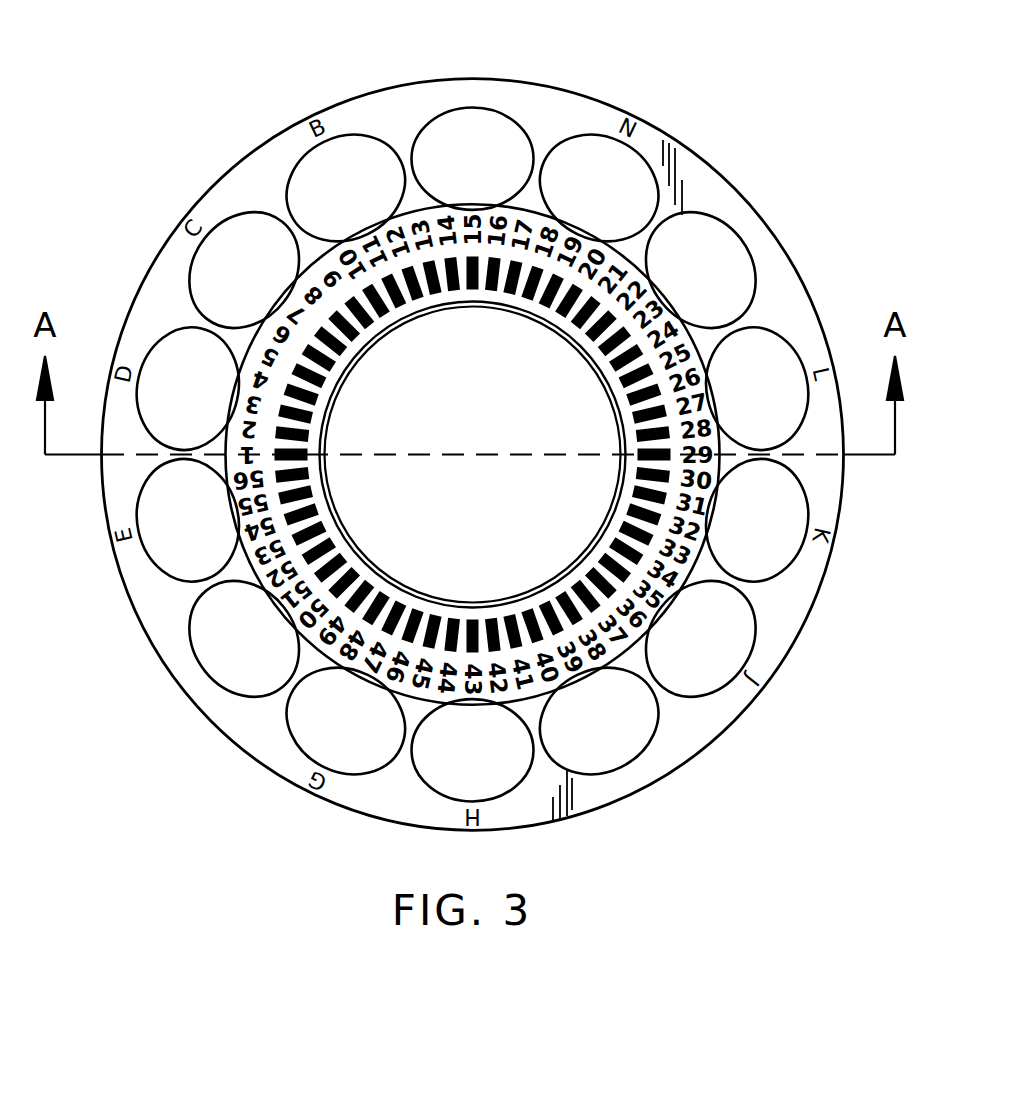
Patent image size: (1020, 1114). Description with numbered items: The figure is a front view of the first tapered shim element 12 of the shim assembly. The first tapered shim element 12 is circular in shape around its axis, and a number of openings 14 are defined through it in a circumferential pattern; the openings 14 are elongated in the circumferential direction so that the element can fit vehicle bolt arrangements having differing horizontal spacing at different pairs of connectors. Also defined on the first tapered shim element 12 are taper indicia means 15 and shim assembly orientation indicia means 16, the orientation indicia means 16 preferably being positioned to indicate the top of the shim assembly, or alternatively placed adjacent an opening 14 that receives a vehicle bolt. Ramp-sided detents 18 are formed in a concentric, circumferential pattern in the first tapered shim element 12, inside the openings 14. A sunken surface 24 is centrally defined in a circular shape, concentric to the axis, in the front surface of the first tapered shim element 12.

The first tapered shim element 12 is at (622, 96).
The openings 14 is at (460, 132).
The taper indicia means 15 is at (628, 415).
The shim assembly orientation indicia means 16 is at (757, 243).
The ramp-sided detents 18 is at (290, 430).
The sunken surface 24 is at (533, 604).